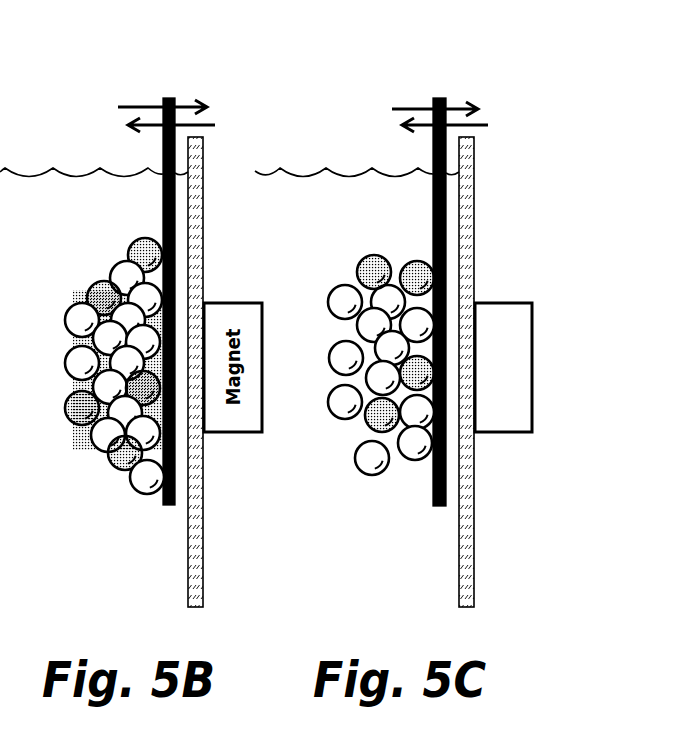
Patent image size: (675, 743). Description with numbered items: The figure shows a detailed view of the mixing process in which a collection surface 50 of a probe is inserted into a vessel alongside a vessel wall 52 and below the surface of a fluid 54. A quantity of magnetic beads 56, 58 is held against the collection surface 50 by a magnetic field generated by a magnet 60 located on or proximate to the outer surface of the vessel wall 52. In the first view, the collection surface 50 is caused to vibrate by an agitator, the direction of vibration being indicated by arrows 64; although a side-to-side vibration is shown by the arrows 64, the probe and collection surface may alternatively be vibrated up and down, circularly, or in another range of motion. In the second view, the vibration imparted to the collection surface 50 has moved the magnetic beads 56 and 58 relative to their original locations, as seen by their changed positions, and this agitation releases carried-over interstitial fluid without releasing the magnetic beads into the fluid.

In FIG. 5B, the arrows 64 is at (126, 90).
In FIG. 5C, the collection surface 50 is at (432, 107).
In FIG. 5C, the surface of a fluid 54 is at (362, 172).
In FIG. 5C, the magnetic beads 56 is at (374, 268).
In FIG. 5C, the magnetic beads 58 is at (342, 297).
In FIG. 5C, the magnet 60 is at (489, 432).
In FIG. 5C, the vessel wall 52 is at (463, 539).